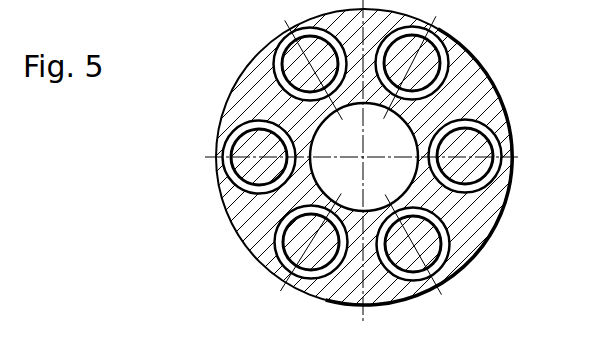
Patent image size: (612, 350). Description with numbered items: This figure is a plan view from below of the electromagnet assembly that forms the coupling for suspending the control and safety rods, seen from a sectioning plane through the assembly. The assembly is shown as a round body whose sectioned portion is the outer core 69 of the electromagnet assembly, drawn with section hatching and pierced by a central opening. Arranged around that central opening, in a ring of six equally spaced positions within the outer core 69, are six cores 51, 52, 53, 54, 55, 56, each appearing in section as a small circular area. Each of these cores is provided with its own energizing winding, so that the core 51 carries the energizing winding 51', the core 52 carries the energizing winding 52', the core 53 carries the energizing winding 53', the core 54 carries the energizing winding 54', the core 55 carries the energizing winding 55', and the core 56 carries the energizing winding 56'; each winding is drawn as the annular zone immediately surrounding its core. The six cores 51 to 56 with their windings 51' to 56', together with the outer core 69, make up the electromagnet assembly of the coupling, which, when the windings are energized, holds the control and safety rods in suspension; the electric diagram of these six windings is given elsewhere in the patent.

The core 51 is at (462, 63).
The energizing winding 51' is at (463, 63).
The core 52 is at (264, 243).
The energizing winding 52' is at (283, 258).
The core 53 is at (463, 244).
The energizing winding 53' is at (442, 258).
The core 54 is at (261, 65).
The energizing winding 54' is at (267, 64).
The core 55 is at (503, 162).
The energizing winding 55' is at (502, 145).
The core 56 is at (212, 157).
The energizing winding 56' is at (220, 152).
The outer core 69 is at (245, 208).